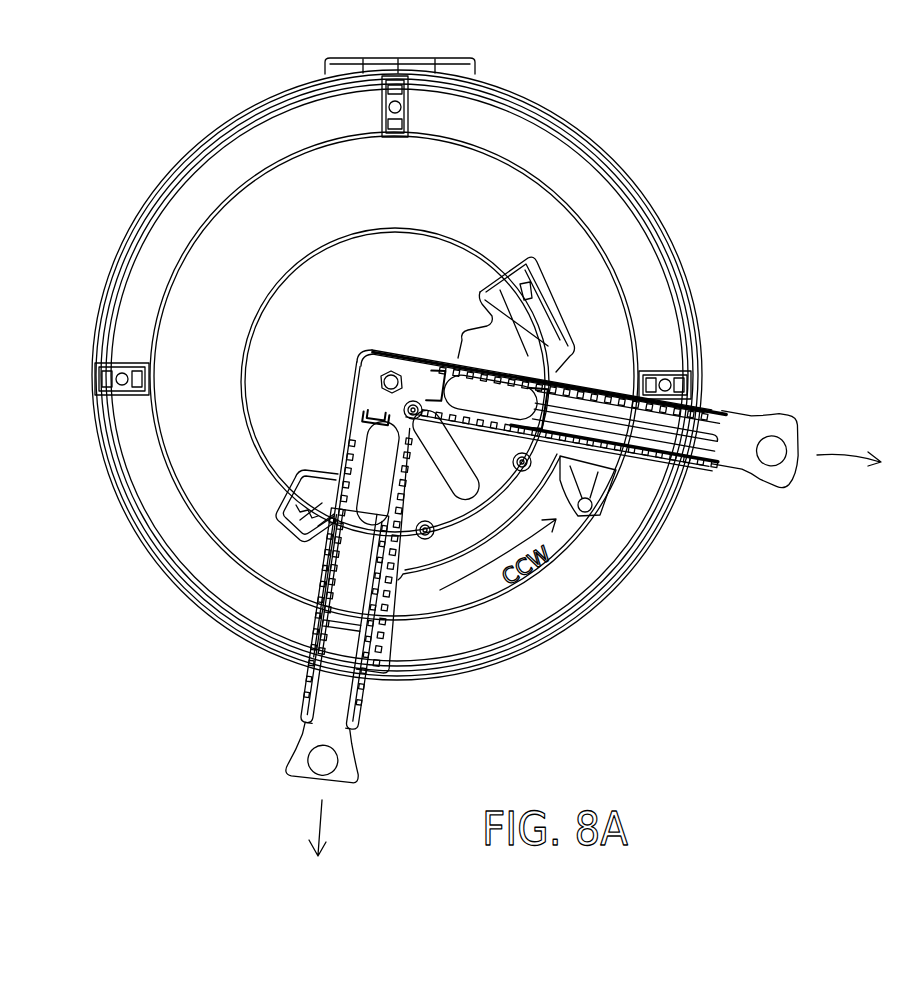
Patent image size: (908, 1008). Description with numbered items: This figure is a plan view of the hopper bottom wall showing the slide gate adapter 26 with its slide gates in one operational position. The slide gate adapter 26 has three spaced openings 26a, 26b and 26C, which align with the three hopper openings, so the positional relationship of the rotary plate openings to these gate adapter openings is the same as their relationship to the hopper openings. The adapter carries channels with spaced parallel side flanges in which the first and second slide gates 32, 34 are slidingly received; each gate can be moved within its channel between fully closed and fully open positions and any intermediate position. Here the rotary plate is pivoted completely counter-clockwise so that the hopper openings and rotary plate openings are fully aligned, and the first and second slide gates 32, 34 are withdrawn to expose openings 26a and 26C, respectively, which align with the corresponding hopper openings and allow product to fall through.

The slide gate adapter 26 is at (395, 354).
The gate adapter opening 26a is at (512, 392).
The gate adapter opening 26b is at (466, 474).
The gate adapter opening 26C is at (378, 453).
The first slide gate 32 is at (746, 444).
The second slide gate 34 is at (322, 727).